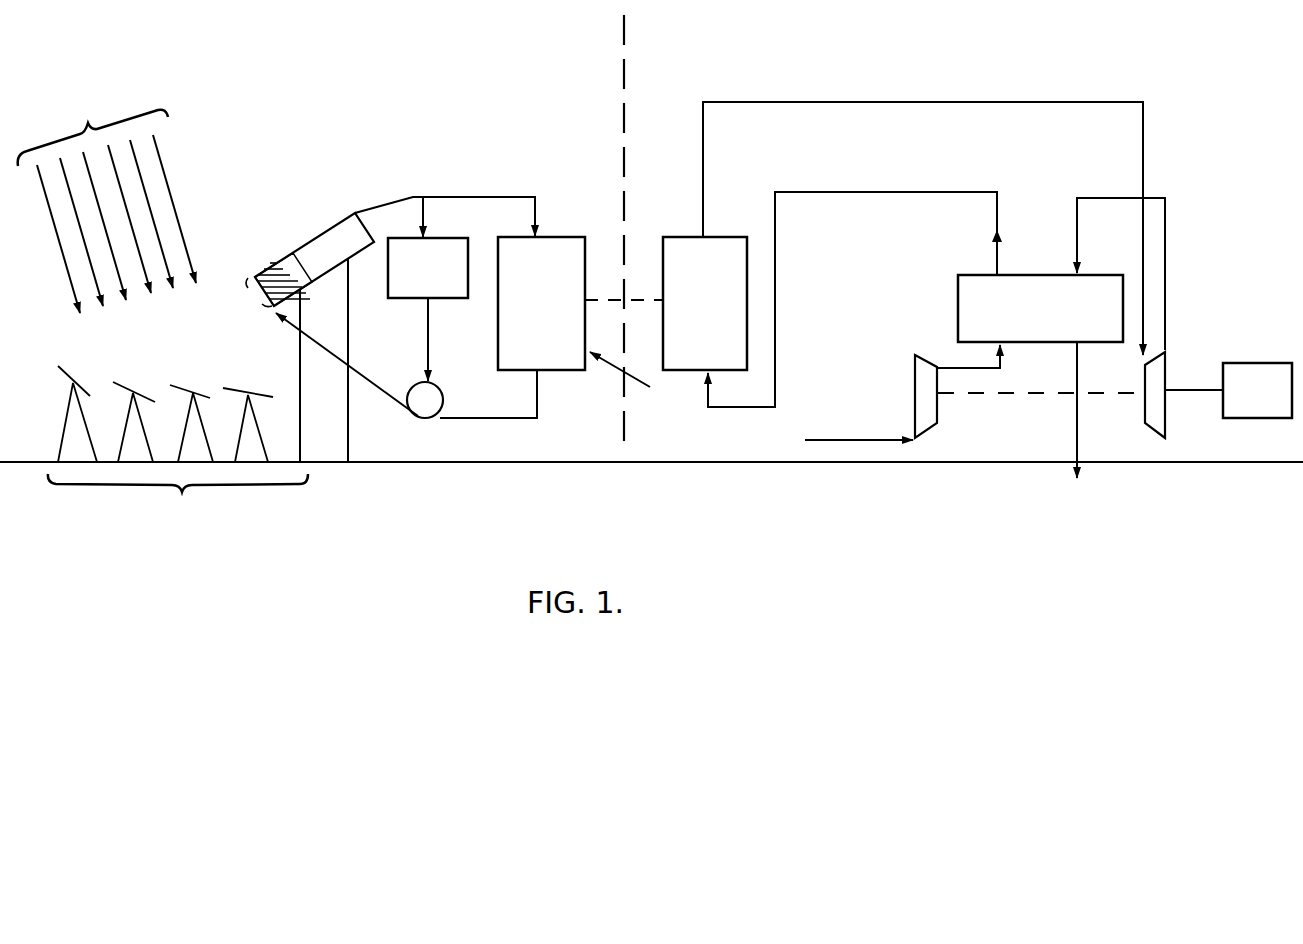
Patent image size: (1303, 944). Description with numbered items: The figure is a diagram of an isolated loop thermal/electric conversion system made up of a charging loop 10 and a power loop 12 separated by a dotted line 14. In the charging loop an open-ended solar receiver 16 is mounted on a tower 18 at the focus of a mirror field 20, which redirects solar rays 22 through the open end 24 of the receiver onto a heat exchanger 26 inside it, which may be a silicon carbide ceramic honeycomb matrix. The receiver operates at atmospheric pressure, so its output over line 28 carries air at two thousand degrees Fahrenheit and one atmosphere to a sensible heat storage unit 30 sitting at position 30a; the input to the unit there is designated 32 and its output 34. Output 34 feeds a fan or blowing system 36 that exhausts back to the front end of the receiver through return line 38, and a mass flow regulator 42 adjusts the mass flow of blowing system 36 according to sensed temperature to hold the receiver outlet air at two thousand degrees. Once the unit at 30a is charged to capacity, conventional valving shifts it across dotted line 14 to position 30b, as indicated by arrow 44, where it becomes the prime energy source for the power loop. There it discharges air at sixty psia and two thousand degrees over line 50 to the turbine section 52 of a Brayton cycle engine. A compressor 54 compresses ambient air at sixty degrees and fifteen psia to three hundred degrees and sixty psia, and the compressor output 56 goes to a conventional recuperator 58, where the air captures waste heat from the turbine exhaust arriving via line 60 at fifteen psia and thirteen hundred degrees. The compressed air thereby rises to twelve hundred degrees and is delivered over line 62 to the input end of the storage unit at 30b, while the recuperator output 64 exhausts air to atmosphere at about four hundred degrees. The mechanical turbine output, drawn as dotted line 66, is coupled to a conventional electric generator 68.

The charging loop 10 is at (252, 516).
The power loop 12 is at (1028, 446).
The dotted line 14 is at (624, 78).
The open-ended solar receiver 16 is at (305, 227).
The tower 18 is at (322, 457).
The mirror field 20 is at (178, 438).
The solar rays 22 is at (107, 207).
The open end 24 is at (257, 300).
The heat exchanger 26 is at (280, 270).
The line 28 is at (413, 197).
The sensible heat storage unit 30 is at (600, 395).
The charging position of sensible heat storage unit 30a is at (585, 252).
The power position of sensible heat storage unit 30b is at (718, 236).
The input 32 is at (520, 235).
The output 34 is at (478, 421).
The fan or blowing system 36 is at (408, 378).
The return line 38 is at (272, 318).
The mass flow regulator 42 is at (448, 237).
The arrow 44 is at (601, 297).
The line 50 is at (718, 102).
The turbine section 52 is at (1148, 428).
The compressor 54 is at (928, 428).
The compressor output 56 is at (985, 369).
The recuperator 58 is at (1003, 275).
The line 60 is at (1165, 283).
The line 62 is at (775, 287).
The recuperator output 64 is at (1075, 415).
The mechanical turbine output 66 is at (1188, 390).
The electric generator 68 is at (1265, 363).